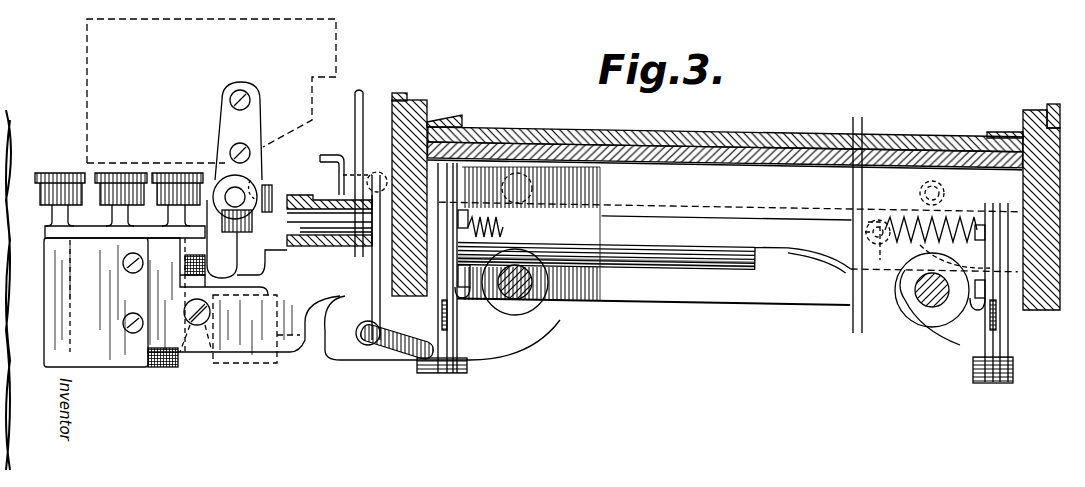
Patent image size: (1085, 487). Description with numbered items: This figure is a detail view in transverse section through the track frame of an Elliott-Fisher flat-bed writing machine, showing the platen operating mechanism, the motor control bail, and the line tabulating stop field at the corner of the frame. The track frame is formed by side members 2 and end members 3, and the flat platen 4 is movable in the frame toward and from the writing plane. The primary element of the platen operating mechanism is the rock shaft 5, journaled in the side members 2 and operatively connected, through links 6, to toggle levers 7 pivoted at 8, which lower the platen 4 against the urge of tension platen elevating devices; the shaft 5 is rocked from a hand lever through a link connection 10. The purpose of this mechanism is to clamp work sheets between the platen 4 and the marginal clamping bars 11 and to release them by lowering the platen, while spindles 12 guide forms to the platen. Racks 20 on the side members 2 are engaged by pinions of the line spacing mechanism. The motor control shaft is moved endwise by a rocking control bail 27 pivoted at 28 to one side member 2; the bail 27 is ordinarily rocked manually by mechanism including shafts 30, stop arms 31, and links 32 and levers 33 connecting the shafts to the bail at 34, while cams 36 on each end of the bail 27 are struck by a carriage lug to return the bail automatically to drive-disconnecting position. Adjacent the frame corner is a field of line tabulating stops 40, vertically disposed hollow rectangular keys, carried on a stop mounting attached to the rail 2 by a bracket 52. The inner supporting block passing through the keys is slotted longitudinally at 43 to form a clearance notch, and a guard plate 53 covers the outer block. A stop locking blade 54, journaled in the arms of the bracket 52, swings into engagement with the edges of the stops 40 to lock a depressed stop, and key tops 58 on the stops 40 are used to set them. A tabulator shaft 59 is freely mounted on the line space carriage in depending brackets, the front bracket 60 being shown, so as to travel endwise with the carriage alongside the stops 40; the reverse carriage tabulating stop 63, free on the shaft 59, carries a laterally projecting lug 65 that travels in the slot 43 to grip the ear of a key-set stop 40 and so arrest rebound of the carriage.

The side members 2 is at (398, 108).
The end members 3 is at (679, 299).
The flat platen 4 is at (740, 128).
The rock shaft 5 is at (733, 202).
The links 6 is at (446, 375).
The toggle levers 7 is at (462, 330).
The pivot 8 is at (470, 300).
The link connection 10 is at (400, 360).
The marginal clamping bars 11 is at (440, 121).
The spindles 12 is at (175, 232).
The racks 20 is at (402, 94).
The control bail 27 is at (355, 105).
The bail pivot 28 is at (330, 297).
The shafts 30 is at (530, 292).
The stop arms 31 is at (520, 316).
The links 32 is at (691, 215).
The levers 33 is at (729, 220).
The bail connection 34 is at (367, 175).
The cams 36 is at (328, 164).
The line tabulating stops 40 is at (78, 240).
The longitudinal slot 43 is at (195, 268).
The bracket 52 is at (297, 352).
The guard plate 53 is at (96, 302).
The stop locking blade 54 is at (200, 340).
The key tops 58 is at (100, 175).
The tabulator shaft 59 is at (244, 192).
The front bracket 60 is at (270, 200).
The reverse carriage tabulating stop 63 is at (222, 250).
The lug 65 is at (200, 280).